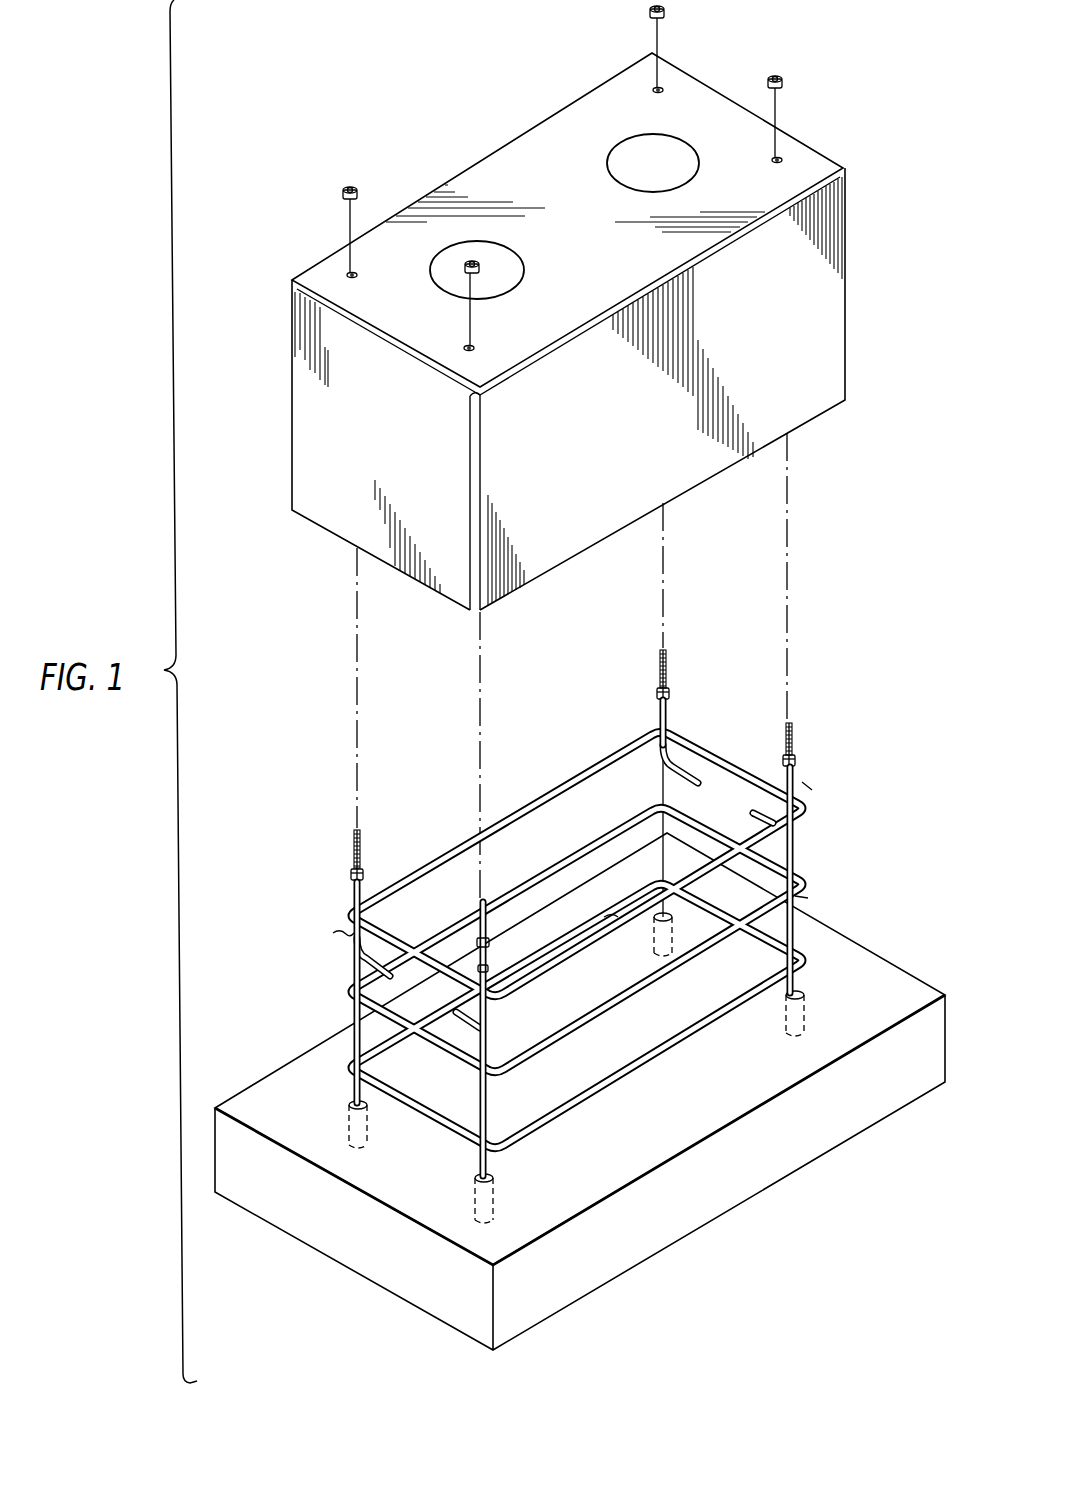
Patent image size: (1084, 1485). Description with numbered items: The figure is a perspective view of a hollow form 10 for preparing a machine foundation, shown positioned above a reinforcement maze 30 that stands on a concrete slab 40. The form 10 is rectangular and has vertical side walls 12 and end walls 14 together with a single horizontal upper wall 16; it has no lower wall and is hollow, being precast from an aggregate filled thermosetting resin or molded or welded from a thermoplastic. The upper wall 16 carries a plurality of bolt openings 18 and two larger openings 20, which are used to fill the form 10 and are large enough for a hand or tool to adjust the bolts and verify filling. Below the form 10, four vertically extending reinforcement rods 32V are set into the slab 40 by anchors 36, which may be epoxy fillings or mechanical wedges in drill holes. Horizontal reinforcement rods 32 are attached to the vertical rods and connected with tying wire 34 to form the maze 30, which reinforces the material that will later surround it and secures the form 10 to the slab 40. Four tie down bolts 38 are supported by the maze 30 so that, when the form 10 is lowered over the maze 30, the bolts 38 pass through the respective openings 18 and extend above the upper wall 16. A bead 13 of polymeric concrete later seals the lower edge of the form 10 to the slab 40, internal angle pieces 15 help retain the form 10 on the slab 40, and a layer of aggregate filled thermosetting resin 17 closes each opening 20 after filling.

The hollow form 10 is at (856, 270).
The side wall 12 is at (823, 342).
The bead 13 is at (482, 468).
The end wall 14 is at (313, 455).
The angle piece 15 is at (422, 362).
The upper wall 16 is at (677, 84).
The layer of aggregate filled thermosetting resin 17 is at (642, 292).
The bolt openings 18 is at (770, 160).
The opening 20 is at (676, 149).
The reinforcement maze 30 is at (815, 878).
The horizontal reinforcement rods 32 is at (554, 790).
The vertical reinforcement rods 32V is at (797, 915).
The tying wire 34 is at (801, 793).
The anchors 36 is at (500, 1190).
The tie down bolts 38 is at (680, 775).
The concrete slab 40 is at (823, 1135).